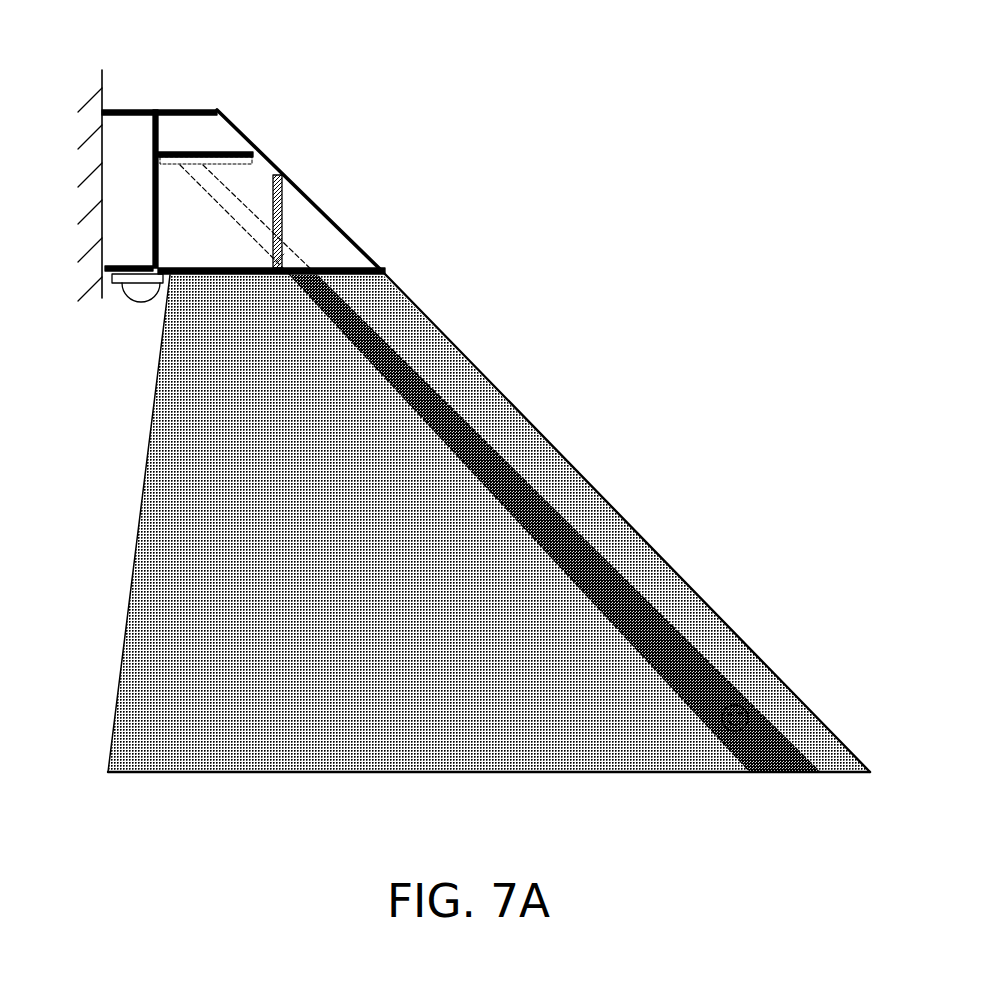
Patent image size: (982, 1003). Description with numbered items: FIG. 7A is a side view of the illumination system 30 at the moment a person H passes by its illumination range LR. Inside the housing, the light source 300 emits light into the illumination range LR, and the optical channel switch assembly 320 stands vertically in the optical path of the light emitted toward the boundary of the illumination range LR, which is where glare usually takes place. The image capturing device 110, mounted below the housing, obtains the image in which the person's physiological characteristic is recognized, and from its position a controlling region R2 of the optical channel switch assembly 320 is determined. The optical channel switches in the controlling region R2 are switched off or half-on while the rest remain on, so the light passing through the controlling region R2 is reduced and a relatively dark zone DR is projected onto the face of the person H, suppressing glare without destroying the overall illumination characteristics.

The illumination system 30 is at (78, 37).
The light source 300 is at (192, 160).
The optical channel switch assembly 320 is at (283, 225).
The controlling region R2 is at (285, 256).
The image capturing device 110 is at (128, 298).
The illumination range LR is at (180, 537).
The relatively dark zone DR is at (687, 658).
The person H is at (747, 724).